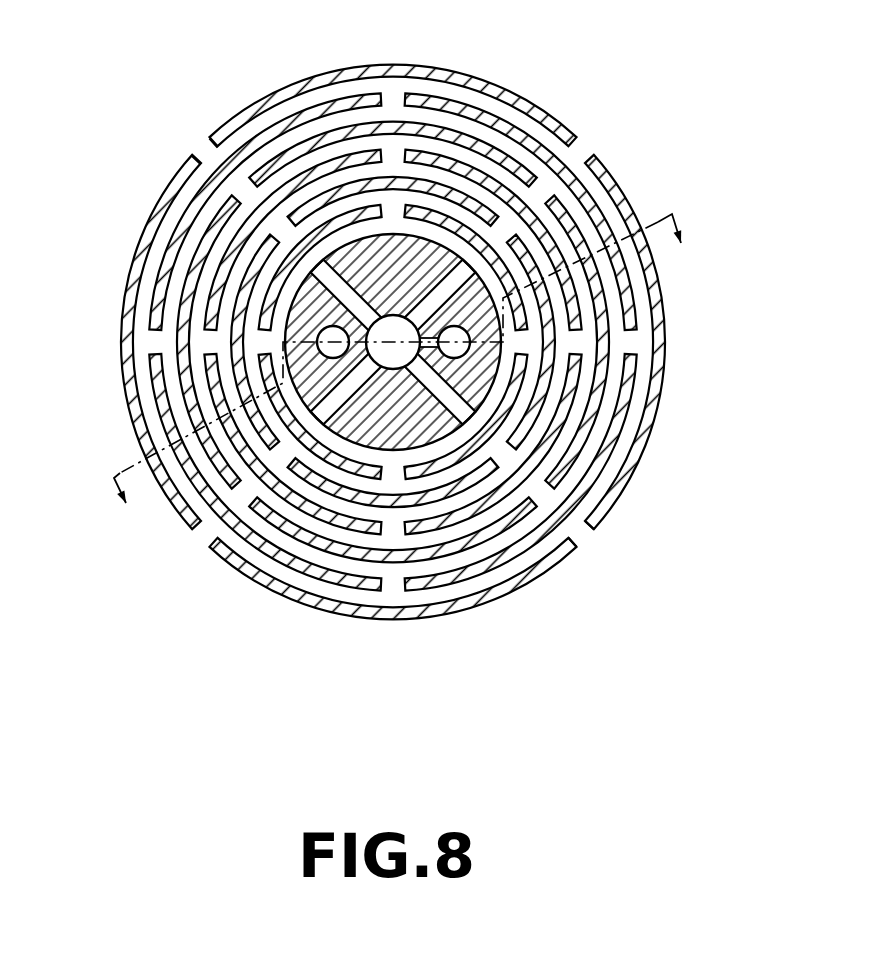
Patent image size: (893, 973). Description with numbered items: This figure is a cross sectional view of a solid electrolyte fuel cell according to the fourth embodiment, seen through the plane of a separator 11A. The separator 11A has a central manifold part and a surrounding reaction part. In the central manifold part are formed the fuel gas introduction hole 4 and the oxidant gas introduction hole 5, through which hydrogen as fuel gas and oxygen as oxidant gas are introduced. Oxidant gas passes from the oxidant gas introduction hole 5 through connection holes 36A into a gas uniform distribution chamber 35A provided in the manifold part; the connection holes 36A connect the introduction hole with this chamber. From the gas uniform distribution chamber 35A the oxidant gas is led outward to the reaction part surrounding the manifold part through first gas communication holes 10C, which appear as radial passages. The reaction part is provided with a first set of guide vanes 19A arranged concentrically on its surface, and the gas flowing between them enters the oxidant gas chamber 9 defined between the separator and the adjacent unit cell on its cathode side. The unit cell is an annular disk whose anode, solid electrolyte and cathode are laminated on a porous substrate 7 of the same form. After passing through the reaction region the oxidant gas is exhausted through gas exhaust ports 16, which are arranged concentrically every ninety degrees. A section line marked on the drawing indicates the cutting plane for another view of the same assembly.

The oxidant gas chamber 9 is at (339, 151).
The gas exhaust port 16 is at (203, 147).
The first set of guide vanes 19A is at (535, 205).
The connection hole 36A is at (437, 329).
The gas uniform distribution chamber 35A is at (393, 315).
The fuel gas introduction hole 4 is at (334, 359).
The oxidant gas introduction hole 5 is at (453, 359).
The first gas communication hole 10C is at (468, 415).
The separator 11A is at (612, 513).
The porous substrate 7 is at (389, 359).